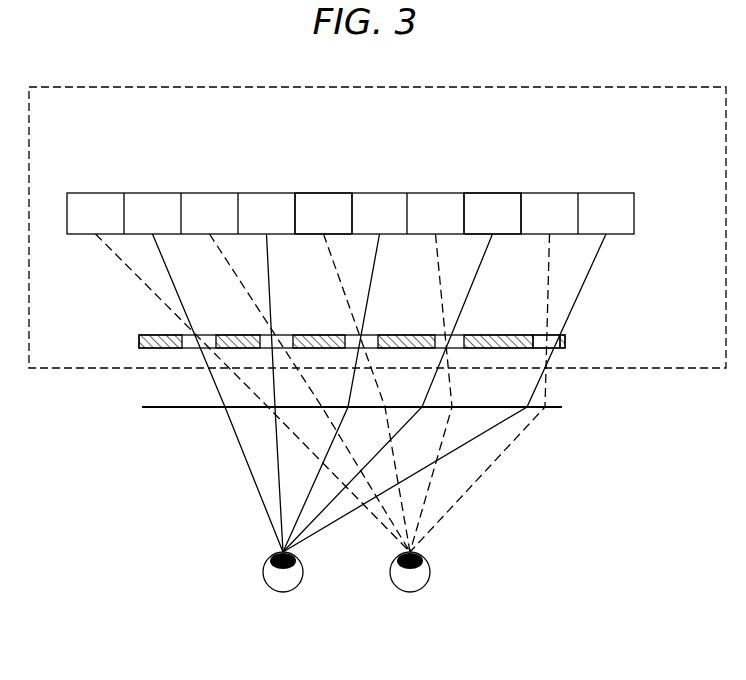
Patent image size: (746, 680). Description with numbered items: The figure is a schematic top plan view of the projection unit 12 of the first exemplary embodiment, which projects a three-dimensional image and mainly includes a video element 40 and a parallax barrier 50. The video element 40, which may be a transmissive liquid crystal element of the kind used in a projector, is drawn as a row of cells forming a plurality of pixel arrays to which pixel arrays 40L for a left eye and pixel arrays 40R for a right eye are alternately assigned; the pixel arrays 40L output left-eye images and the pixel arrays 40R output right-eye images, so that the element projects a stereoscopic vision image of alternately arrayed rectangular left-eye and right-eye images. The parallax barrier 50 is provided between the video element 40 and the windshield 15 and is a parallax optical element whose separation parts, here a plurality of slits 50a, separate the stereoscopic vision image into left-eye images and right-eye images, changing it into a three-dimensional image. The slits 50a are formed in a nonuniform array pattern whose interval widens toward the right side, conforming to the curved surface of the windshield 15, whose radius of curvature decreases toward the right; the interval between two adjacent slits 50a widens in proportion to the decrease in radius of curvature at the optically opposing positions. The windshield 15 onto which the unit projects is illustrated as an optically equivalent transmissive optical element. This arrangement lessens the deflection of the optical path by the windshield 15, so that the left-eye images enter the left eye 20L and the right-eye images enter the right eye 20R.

The projection unit 12 is at (645, 87).
The video element 40 is at (633, 193).
The pixel arrays for a right eye 40R is at (333, 199).
The pixel arrays for a left eye 40L is at (497, 199).
The parallax barrier 50 is at (565, 341).
The slits 50a is at (550, 335).
The windshield 15 is at (562, 408).
The left eye 20L is at (283, 593).
The right eye 20R is at (410, 593).